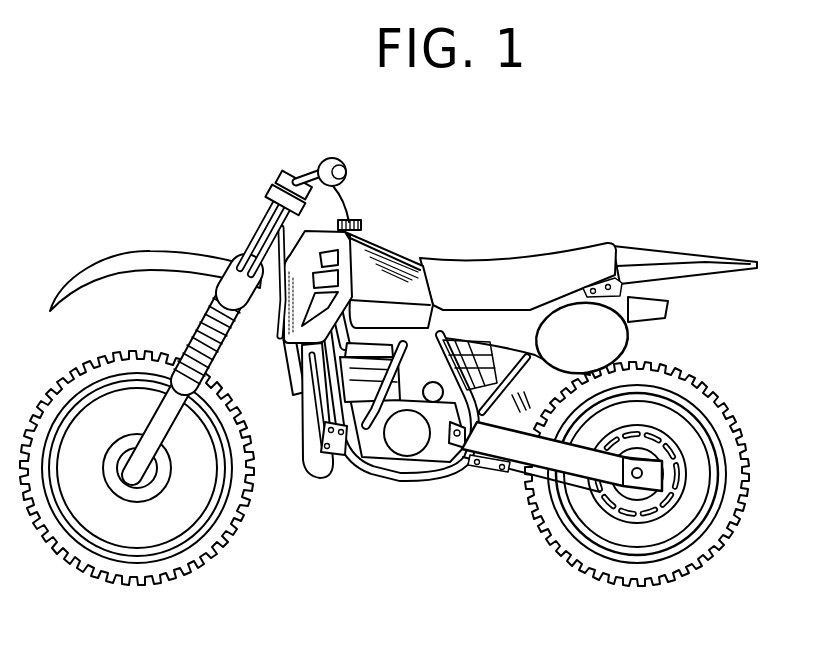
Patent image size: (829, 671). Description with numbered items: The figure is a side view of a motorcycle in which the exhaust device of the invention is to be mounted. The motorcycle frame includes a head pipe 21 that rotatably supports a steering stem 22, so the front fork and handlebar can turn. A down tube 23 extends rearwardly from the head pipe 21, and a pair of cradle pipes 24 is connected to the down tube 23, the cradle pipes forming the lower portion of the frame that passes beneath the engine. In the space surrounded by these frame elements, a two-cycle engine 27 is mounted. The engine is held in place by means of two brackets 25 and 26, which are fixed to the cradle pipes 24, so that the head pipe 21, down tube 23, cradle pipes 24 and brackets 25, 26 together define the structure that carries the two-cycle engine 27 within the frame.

The head pipe 21 is at (262, 240).
The steering stem 22 is at (291, 190).
The down tube 23 is at (303, 348).
The cradle pipes 24 is at (318, 388).
The bracket 25 is at (330, 437).
The bracket 26 is at (462, 450).
The two-cycle engine 27 is at (363, 460).